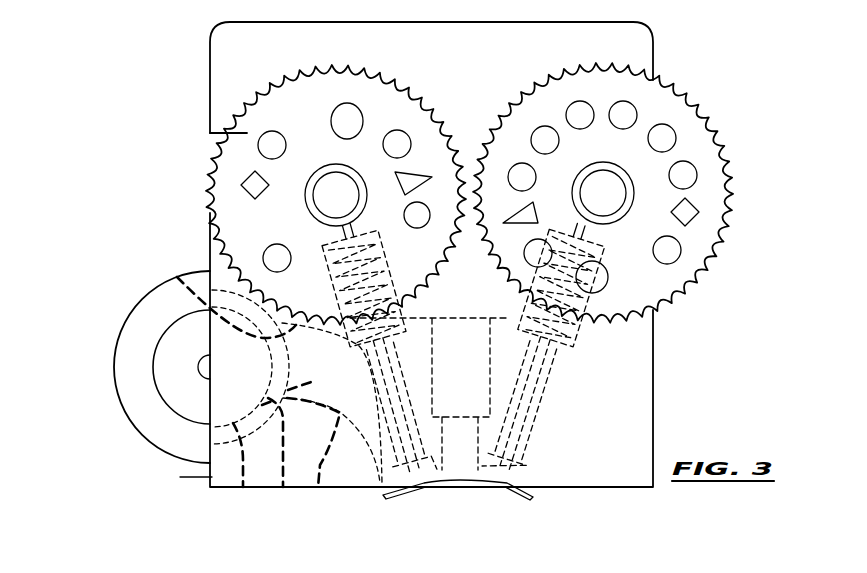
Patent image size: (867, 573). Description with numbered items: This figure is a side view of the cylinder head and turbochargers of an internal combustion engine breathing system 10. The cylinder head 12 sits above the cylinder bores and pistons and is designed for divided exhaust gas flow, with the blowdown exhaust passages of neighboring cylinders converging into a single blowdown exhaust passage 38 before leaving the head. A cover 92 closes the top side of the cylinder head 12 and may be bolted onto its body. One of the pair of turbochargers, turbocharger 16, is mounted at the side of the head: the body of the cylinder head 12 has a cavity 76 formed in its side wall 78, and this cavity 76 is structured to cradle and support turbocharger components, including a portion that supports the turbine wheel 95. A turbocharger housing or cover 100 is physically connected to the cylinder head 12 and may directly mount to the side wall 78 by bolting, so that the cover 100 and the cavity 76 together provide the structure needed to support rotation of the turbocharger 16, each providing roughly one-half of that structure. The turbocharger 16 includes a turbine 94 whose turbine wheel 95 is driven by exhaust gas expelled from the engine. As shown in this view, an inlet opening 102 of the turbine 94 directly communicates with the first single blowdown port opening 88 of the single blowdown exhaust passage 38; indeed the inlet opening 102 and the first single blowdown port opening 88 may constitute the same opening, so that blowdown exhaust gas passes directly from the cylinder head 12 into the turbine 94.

The internal combustion engine breathing system 10 is at (420, 22).
The cylinder head 12 is at (655, 403).
The turbocharger 16 is at (133, 421).
The single blowdown exhaust passage 38 is at (318, 487).
The cavity 76 is at (243, 487).
The side wall 78 is at (212, 477).
The first single blowdown port opening 88 is at (304, 387).
The cover 92 is at (530, 22).
The turbine 94 is at (135, 355).
The turbine wheel 95 is at (283, 487).
The cover 100 is at (146, 314).
The inlet opening 102 is at (177, 277).